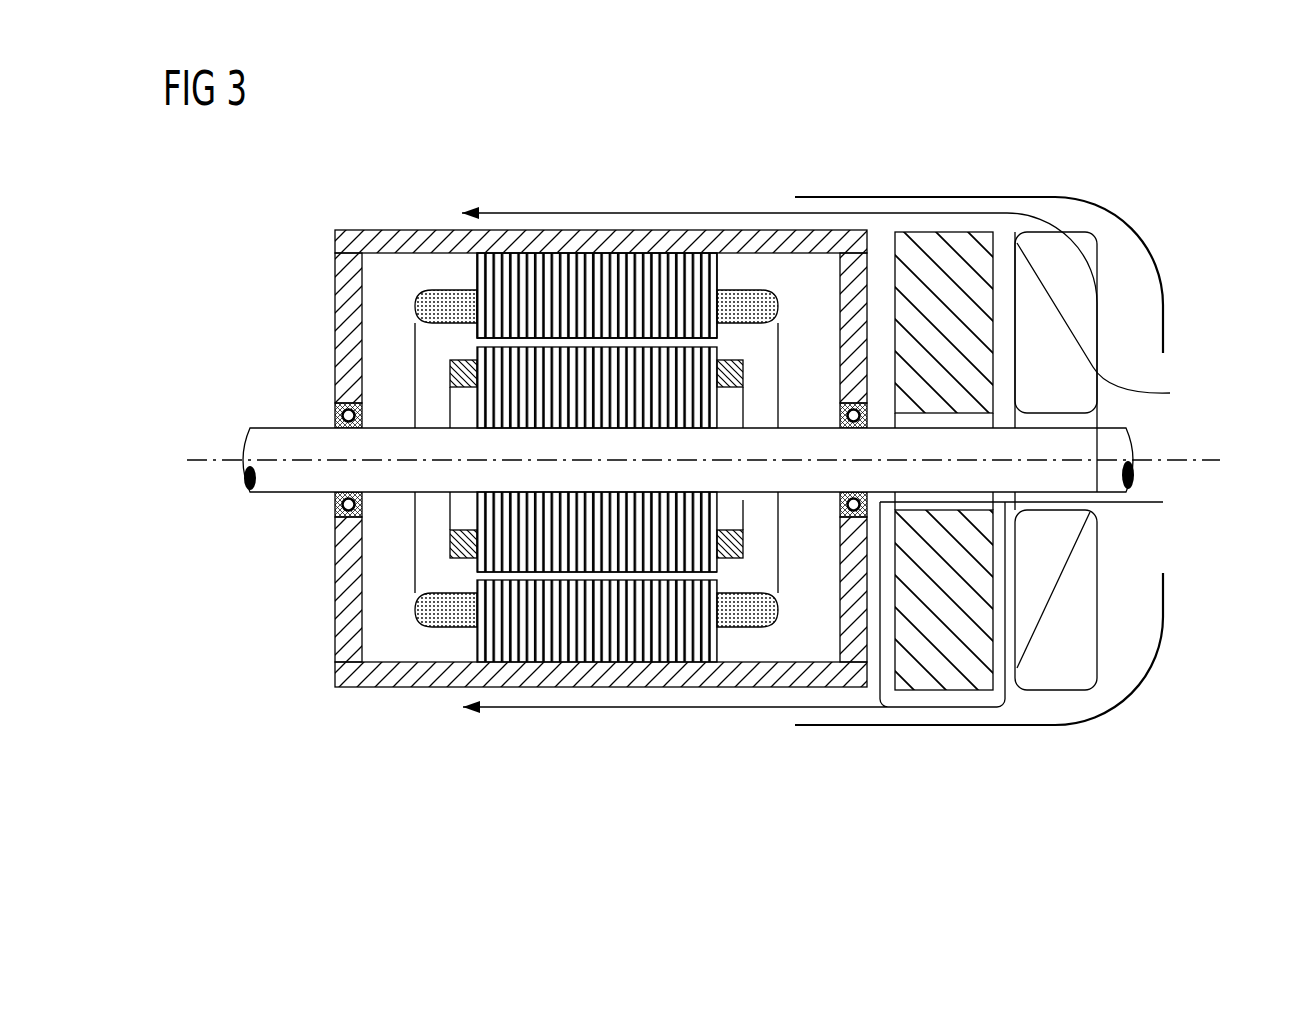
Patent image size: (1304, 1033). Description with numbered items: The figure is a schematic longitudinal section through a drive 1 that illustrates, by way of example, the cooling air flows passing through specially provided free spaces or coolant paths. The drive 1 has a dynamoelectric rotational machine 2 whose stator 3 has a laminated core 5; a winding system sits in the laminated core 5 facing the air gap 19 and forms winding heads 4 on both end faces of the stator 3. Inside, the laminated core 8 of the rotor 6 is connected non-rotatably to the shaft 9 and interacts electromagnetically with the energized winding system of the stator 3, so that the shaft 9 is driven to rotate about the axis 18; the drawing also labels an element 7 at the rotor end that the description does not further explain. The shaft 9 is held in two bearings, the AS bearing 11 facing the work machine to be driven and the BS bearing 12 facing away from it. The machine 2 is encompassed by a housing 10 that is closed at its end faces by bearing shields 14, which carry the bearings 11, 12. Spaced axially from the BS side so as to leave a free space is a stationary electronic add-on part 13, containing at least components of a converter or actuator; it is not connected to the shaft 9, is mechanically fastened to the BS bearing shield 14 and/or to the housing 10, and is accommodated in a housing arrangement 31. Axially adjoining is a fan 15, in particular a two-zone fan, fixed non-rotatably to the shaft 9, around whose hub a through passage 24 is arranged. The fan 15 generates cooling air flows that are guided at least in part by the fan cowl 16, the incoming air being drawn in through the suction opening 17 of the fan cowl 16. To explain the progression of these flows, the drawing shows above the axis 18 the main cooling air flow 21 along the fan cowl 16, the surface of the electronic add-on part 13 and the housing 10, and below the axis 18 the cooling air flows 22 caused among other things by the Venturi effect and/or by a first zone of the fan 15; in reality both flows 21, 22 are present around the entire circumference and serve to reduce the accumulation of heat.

The drive 1 is at (244, 210).
The dynamoelectric rotational machine 2 is at (736, 266).
The stator 3 is at (637, 266).
The winding heads 4 is at (445, 290).
The laminated core 5 is at (603, 240).
The rotor 6 is at (480, 500).
The rotor end ring 7 is at (450, 548).
The laminated core 8 is at (717, 513).
The shaft 9 is at (277, 428).
The housing 10 is at (342, 230).
The AS bearing 11 is at (335, 505).
The BS bearing 12 is at (840, 410).
The electronic add-on part 13 is at (946, 241).
The bearing shields 14 is at (335, 295).
The fan 15 is at (1058, 230).
The fan cowl 16 is at (1017, 725).
The suction opening 17 is at (1180, 556).
The axis 18 is at (1205, 463).
The air gap 19 is at (710, 577).
The main cooling air flow 21 is at (520, 212).
The cooling air flows 22 is at (693, 707).
The through passage 24 is at (1097, 421).
The housing arrangement 31 is at (983, 232).